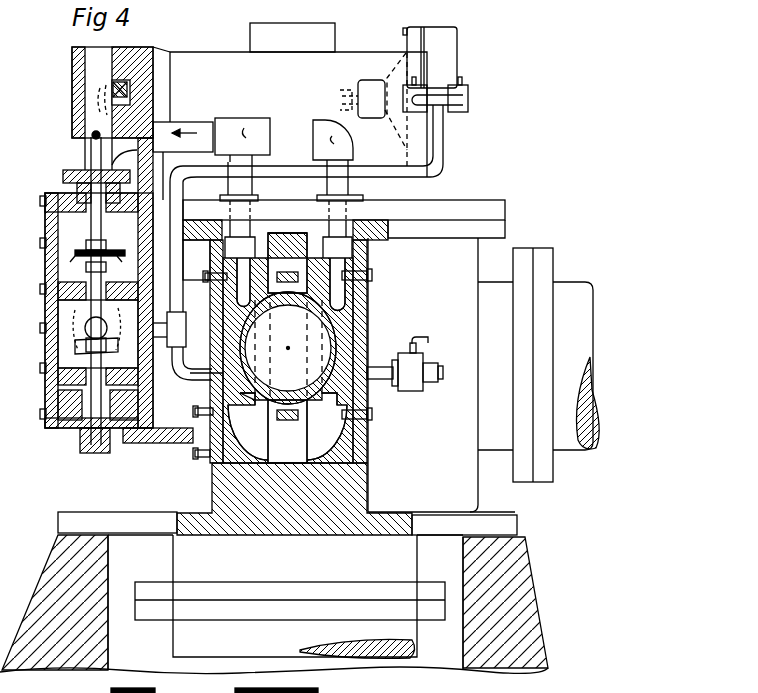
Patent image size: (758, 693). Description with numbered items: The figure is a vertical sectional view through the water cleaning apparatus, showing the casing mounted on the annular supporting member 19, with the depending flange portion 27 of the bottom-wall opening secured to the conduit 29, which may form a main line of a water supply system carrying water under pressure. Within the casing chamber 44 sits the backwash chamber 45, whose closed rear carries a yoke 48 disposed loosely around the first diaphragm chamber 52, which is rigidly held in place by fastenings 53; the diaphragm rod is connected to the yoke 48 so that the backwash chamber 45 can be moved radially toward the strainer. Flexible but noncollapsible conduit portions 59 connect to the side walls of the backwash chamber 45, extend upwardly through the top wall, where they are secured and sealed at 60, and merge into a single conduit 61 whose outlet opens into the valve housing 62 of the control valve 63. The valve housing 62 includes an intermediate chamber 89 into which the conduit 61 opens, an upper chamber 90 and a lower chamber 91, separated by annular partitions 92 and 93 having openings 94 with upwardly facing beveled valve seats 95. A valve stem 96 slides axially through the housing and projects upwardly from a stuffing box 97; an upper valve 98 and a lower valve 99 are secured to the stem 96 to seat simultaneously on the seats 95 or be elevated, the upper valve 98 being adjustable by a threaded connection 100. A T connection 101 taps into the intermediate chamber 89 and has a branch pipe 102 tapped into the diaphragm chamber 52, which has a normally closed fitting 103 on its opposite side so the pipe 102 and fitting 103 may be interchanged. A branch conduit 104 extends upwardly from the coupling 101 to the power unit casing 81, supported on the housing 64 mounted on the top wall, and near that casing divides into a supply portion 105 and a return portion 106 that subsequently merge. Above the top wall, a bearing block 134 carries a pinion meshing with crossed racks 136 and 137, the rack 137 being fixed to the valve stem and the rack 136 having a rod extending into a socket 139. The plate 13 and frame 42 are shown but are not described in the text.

The table plate 13 is at (376, 180).
The annular supporting member 19 is at (533, 613).
The depending flange portion 27 is at (260, 591).
The conduit 29 is at (290, 620).
The frame casting 42 is at (483, 386).
The casing chamber 44 is at (350, 452).
The backwash chamber 45 is at (295, 248).
The yoke 48 is at (300, 276).
The first diaphragm chamber 52 is at (330, 332).
The fastenings 53 is at (373, 275).
The conduit portions 59 is at (350, 180).
The sealed connection 60 is at (317, 197).
The conduit 61 is at (175, 128).
The valve housing 62 is at (58, 341).
The control valve 63 is at (58, 264).
The housing 64 is at (298, 100).
The power unit casing 81 is at (445, 50).
The intermediate chamber 89 is at (58, 312).
The upper chamber 90 is at (45, 226).
The lower chamber 91 is at (58, 392).
The annular partition 92 is at (108, 305).
The annular partition 93 is at (155, 400).
The openings 94 is at (86, 394).
The beveled valve seats 95 is at (106, 392).
The valve stem 96 is at (104, 252).
The stuffing box 97 is at (63, 178).
The upper valve 98 is at (128, 262).
The lower valve 99 is at (62, 352).
The threaded connection 100 is at (86, 245).
The T connection 101 is at (176, 334).
The branch pipe 102 is at (192, 382).
The fitting 103 is at (408, 386).
The branch conduit 104 is at (447, 157).
The supply conduit portion 105 is at (470, 94).
The return conduit portion 106 is at (384, 122).
The bearing block 134 is at (72, 64).
The rack 136 is at (130, 85).
The rack 137 is at (90, 91).
The socket 139 is at (160, 52).